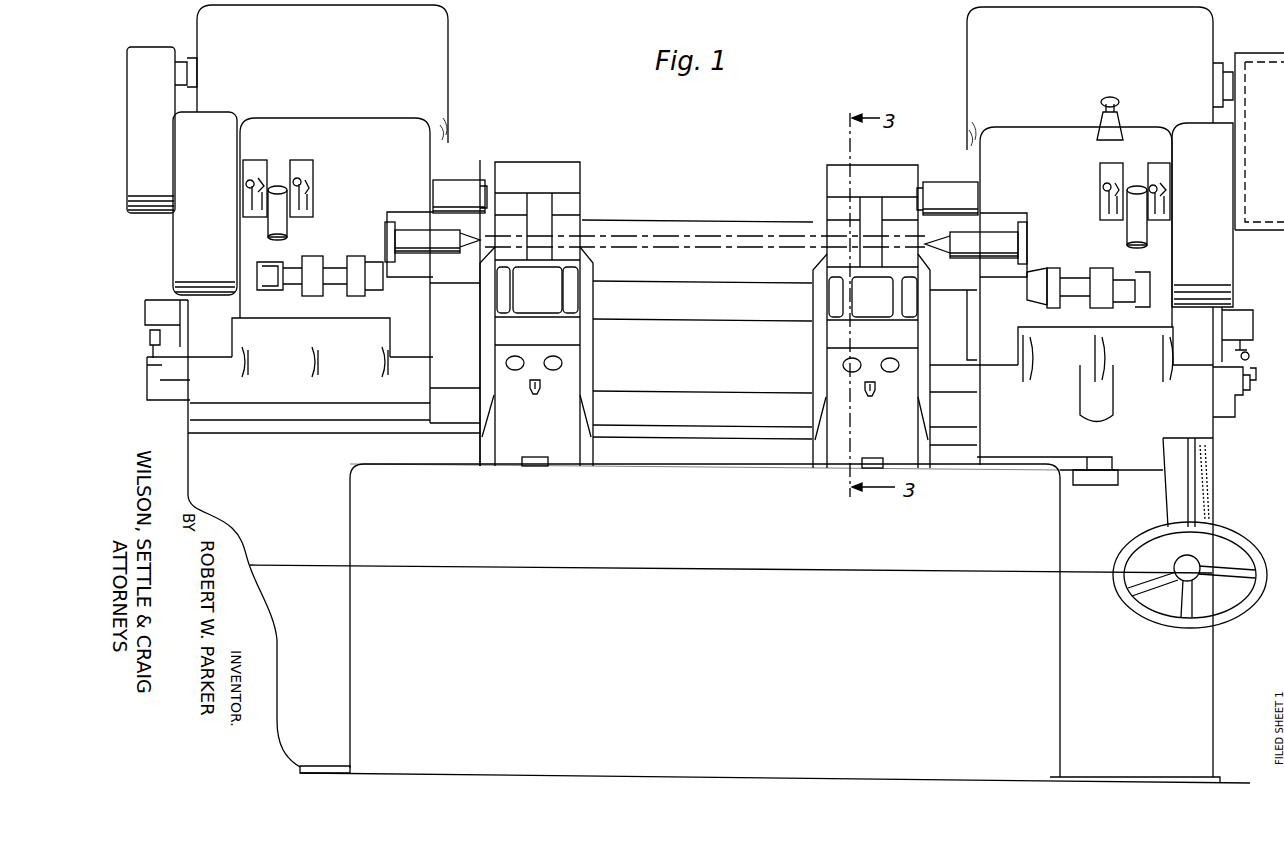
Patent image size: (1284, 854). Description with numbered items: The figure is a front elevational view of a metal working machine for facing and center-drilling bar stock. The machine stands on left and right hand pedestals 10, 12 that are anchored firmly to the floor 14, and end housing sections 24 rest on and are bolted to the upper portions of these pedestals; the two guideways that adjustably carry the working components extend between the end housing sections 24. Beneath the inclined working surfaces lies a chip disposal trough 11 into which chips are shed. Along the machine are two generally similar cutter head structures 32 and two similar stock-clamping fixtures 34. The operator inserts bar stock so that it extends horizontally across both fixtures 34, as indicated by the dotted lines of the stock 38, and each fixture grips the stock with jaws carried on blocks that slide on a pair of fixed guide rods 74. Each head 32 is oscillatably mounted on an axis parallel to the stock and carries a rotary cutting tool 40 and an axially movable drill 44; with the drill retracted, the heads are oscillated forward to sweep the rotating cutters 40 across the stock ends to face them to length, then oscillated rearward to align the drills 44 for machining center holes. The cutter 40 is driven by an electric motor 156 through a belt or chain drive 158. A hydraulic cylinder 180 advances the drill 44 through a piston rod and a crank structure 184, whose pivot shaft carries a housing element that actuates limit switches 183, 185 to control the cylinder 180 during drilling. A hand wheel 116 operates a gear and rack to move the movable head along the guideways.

The left hand pedestal 10 is at (330, 665).
The chip disposal trough 11 is at (637, 567).
The right hand pedestal 12 is at (1193, 680).
The floor 14 is at (445, 773).
The end housing sections 24 is at (333, 508).
The cutter head structure 32 is at (341, 120).
The stock-clamping fixture 34 is at (548, 165).
The stock 38 is at (582, 226).
The rotary cutting tool 40 is at (455, 187).
The drill 44 is at (412, 226).
The guide rods 74 is at (842, 363).
The hand wheel 116 is at (1152, 620).
The electric motor 156 is at (433, 50).
The belt or chain drive 158 is at (1252, 232).
The hydraulic cylinder 180 is at (312, 292).
The limit switch 183 is at (313, 162).
The crank structure 184 is at (1140, 275).
The limit switch 185 is at (256, 160).